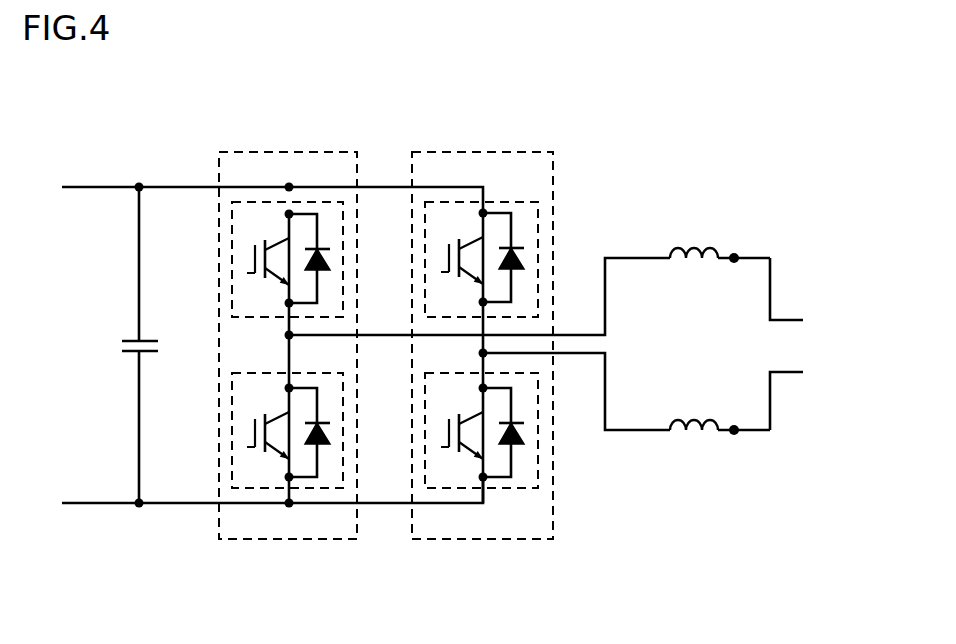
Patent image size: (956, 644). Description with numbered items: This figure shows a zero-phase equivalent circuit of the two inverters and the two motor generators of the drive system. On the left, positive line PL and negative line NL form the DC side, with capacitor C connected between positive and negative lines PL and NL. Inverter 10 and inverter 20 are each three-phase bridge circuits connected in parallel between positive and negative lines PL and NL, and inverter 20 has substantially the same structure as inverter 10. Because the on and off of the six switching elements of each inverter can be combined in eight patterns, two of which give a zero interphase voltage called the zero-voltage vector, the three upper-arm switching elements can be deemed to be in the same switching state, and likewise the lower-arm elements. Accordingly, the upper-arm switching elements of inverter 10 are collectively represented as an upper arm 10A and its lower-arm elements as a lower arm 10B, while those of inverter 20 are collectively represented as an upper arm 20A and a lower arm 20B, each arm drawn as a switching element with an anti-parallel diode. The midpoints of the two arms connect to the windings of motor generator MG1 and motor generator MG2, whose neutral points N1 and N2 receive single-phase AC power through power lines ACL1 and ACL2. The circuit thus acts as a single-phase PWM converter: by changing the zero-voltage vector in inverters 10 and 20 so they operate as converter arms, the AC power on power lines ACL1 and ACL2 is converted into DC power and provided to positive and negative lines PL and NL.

The inverter 10 is at (252, 152).
The upper arm 10A is at (318, 200).
The lower arm 10B is at (263, 488).
The inverter 20 is at (446, 152).
The upper arm 20A is at (512, 200).
The lower arm 20B is at (508, 488).
The positive line PL is at (98, 185).
The negative line NL is at (97, 505).
The capacitor C is at (151, 338).
The motor generator MG1 is at (737, 188).
The motor generator MG2 is at (711, 454).
The neutral point N1 is at (736, 256).
The neutral point N2 is at (736, 432).
The power line ACL1 is at (770, 283).
The power line ACL2 is at (770, 410).